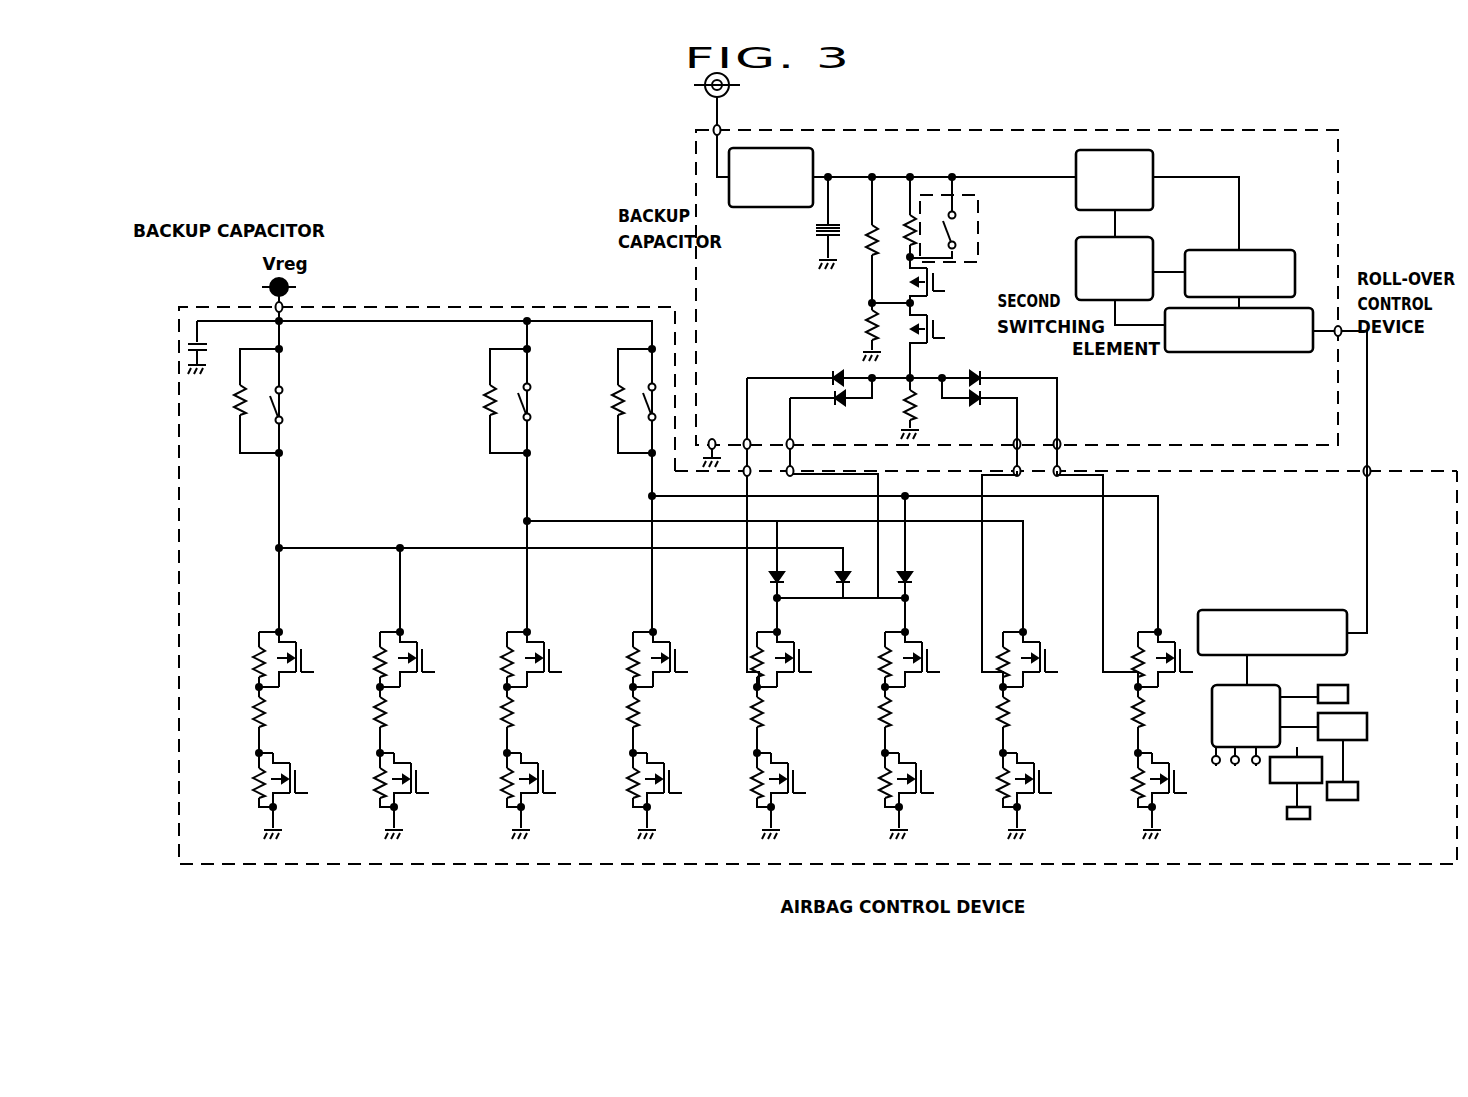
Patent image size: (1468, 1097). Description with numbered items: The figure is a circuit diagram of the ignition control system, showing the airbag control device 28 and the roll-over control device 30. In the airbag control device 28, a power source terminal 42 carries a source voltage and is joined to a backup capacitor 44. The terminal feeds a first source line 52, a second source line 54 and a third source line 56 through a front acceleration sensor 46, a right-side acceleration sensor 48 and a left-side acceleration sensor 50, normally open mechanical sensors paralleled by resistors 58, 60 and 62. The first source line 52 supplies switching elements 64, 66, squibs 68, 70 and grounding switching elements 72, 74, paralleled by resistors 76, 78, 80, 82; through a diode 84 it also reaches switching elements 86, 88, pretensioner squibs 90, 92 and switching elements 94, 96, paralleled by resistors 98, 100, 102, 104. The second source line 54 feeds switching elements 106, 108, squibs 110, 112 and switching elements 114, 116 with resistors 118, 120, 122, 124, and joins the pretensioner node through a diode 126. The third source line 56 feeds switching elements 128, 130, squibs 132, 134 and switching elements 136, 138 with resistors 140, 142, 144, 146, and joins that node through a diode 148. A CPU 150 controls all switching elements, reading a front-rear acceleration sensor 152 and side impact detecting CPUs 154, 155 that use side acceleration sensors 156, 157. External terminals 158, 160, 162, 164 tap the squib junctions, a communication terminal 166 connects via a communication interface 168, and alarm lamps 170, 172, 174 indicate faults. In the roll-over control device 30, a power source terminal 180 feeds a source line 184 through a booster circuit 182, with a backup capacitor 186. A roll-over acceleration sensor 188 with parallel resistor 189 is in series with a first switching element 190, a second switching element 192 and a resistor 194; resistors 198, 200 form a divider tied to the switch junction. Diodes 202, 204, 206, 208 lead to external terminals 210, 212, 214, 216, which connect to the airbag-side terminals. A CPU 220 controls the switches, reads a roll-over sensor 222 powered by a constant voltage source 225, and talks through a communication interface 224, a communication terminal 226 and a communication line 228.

The airbag control device 28 is at (516, 307).
The roll-over control device 30 is at (1345, 275).
The power source terminal 42 is at (285, 306).
The backup capacitor 44 is at (203, 338).
The front acceleration sensor 46 is at (283, 403).
The right-side acceleration sensor 48 is at (532, 412).
The left-side acceleration sensor 50 is at (648, 405).
The first source line 52 is at (279, 505).
The second source line 54 is at (527, 503).
The third source line 56 is at (648, 478).
The resistor 58 is at (240, 398).
The resistor 60 is at (488, 402).
The resistor 62 is at (617, 405).
The switching element 64 is at (292, 644).
The switching element 66 is at (413, 644).
The squib 68 is at (262, 718).
The squib 70 is at (383, 718).
The switching element 72 is at (300, 792).
The switching element 74 is at (425, 792).
The resistor 76 is at (258, 660).
The resistor 78 is at (380, 660).
The resistor 80 is at (253, 783).
The resistor 82 is at (374, 783).
The diode 84 is at (840, 578).
The switching element 86 is at (812, 667).
The switching element 88 is at (941, 668).
The squib 90 is at (760, 718).
The squib 92 is at (888, 718).
The switching element 94 is at (802, 792).
The switching element 96 is at (930, 792).
The resistor 98 is at (790, 645).
The resistor 100 is at (918, 645).
The resistor 102 is at (751, 783).
The resistor 104 is at (879, 783).
The switching element 106 is at (540, 644).
The switching element 108 is at (1025, 648).
The squib 110 is at (510, 718).
The squib 112 is at (1006, 718).
The switching element 114 is at (552, 792).
The switching element 116 is at (1048, 792).
The resistor 118 is at (507, 660).
The resistor 120 is at (1010, 656).
The resistor 122 is at (501, 783).
The resistor 124 is at (997, 783).
The diode 126 is at (772, 576).
The switching element 128 is at (665, 645).
The switching element 130 is at (1160, 648).
The squib 132 is at (636, 718).
The squib 134 is at (1141, 730).
The switching element 136 is at (678, 792).
The switching element 138 is at (1183, 792).
The resistor 140 is at (633, 660).
The resistor 142 is at (1142, 660).
The resistor 144 is at (627, 783).
The resistor 146 is at (1132, 783).
The diode 148 is at (906, 576).
The CPU 150 is at (1262, 686).
The front-rear acceleration sensor 152 is at (1345, 686).
The side impact detecting CPU 154 is at (1367, 718).
The side impact detecting CPU 155 is at (1322, 768).
The side acceleration sensor 156 is at (1358, 790).
The side acceleration sensor 157 is at (1310, 812).
The external terminal 158 is at (746, 477).
The external terminal 160 is at (793, 466).
The external terminal 162 is at (1020, 478).
The external terminal 164 is at (1062, 473).
The communication terminal 166 is at (1368, 468).
The communication interface 168 is at (1292, 610).
The frontal impact alarm lamp 170 is at (1216, 766).
The side impact alarm lamp 172 is at (1235, 766).
The roll-over alarm lamp 174 is at (1256, 766).
The power source terminal 180 is at (719, 127).
The booster circuit 182 is at (807, 148).
The source line 184 is at (1005, 177).
The backup capacitor 186 is at (818, 230).
The roll-over acceleration sensor 188 is at (980, 233).
The resistor 189 is at (905, 222).
The first switching element 190 is at (942, 287).
The second switching element 192 is at (940, 336).
The resistor 194 is at (912, 396).
The resistor 198 is at (870, 262).
The resistor 200 is at (866, 326).
The diode 202 is at (836, 372).
The diode 204 is at (838, 400).
The diode 206 is at (985, 397).
The diode 208 is at (980, 376).
The external terminal 210 is at (747, 440).
The external terminal 212 is at (790, 478).
The external terminal 214 is at (1015, 440).
The external terminal 216 is at (1060, 441).
The CPU 220 is at (1153, 242).
The roll-over sensor 222 is at (1258, 250).
The communication interface 224 is at (1240, 354).
The constant voltage source 225 is at (1118, 150).
The communication terminal 226 is at (1338, 337).
The communication line 228 is at (1370, 386).